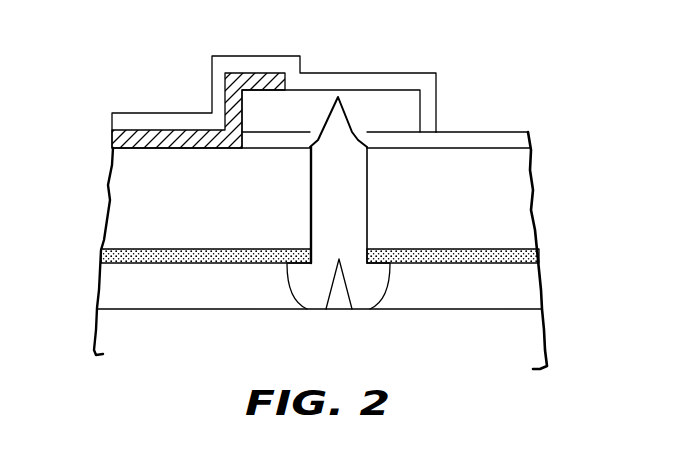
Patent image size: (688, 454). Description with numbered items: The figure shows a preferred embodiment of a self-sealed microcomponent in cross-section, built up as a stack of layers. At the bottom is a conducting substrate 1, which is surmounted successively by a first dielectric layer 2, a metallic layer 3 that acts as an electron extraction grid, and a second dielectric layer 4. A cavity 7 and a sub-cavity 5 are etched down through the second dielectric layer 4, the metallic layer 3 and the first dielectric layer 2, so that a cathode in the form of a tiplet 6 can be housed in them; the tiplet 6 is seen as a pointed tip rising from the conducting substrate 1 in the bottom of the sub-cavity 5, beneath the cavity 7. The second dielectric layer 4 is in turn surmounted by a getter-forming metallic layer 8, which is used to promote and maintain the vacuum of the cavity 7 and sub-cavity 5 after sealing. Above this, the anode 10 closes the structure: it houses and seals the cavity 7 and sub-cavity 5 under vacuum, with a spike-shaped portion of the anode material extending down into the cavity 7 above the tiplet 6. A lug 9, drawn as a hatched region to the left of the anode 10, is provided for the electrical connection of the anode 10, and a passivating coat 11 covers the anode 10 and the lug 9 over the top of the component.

The conducting substrate 1 is at (540, 337).
The first dielectric layer 2 is at (100, 285).
The metallic layer 3 is at (100, 252).
The second dielectric layer 4 is at (113, 192).
The sub-cavity 5 is at (370, 293).
The tiplet 6 is at (335, 302).
The cavity 7 is at (355, 202).
The getter-forming metallic layer 8 is at (407, 137).
The lug 9 is at (167, 137).
The anode 10 is at (320, 97).
The passivating coat 11 is at (250, 61).